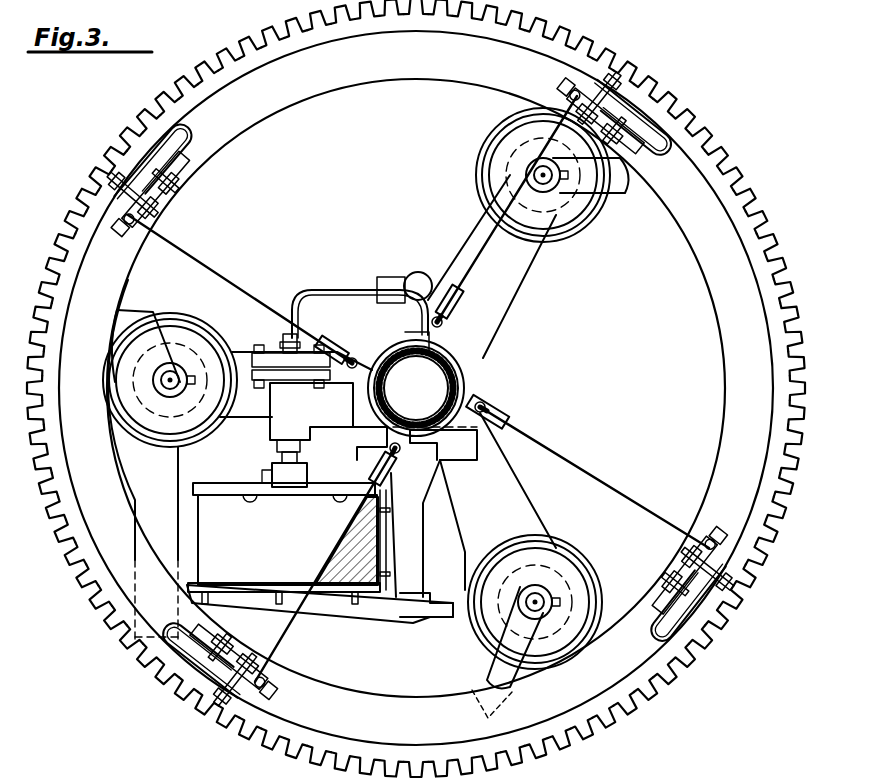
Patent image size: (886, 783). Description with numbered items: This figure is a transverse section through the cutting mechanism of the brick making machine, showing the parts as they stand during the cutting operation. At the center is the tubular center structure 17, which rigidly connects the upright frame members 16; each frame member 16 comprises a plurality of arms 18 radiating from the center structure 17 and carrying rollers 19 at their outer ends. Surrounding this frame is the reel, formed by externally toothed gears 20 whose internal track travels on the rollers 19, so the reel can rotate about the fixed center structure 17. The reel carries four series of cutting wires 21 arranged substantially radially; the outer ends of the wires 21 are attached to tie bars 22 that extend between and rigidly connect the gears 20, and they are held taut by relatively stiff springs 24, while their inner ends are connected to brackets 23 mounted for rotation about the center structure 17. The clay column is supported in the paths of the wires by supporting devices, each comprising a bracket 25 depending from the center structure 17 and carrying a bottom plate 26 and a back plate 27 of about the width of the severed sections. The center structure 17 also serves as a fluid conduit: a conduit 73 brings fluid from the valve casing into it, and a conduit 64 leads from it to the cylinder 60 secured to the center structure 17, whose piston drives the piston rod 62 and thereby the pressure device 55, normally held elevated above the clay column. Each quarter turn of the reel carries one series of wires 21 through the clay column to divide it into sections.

The upright frame member 16 is at (166, 455).
The center structure 17 is at (416, 384).
The arm 18 is at (254, 351).
The roller 19 is at (201, 322).
The gear 20 is at (768, 229).
The wire 21 is at (230, 291).
The tie bar 22 is at (158, 221).
The bracket 23 is at (498, 409).
The spring 24 is at (186, 146).
The bracket 25 is at (377, 626).
The bottom plate 26 is at (291, 576).
The back plate 27 is at (390, 553).
The pressure device 55 is at (326, 484).
The cylinder 60 is at (319, 397).
The piston rod 62 is at (283, 453).
The conduit 64 is at (343, 294).
The conduit 73 is at (393, 284).